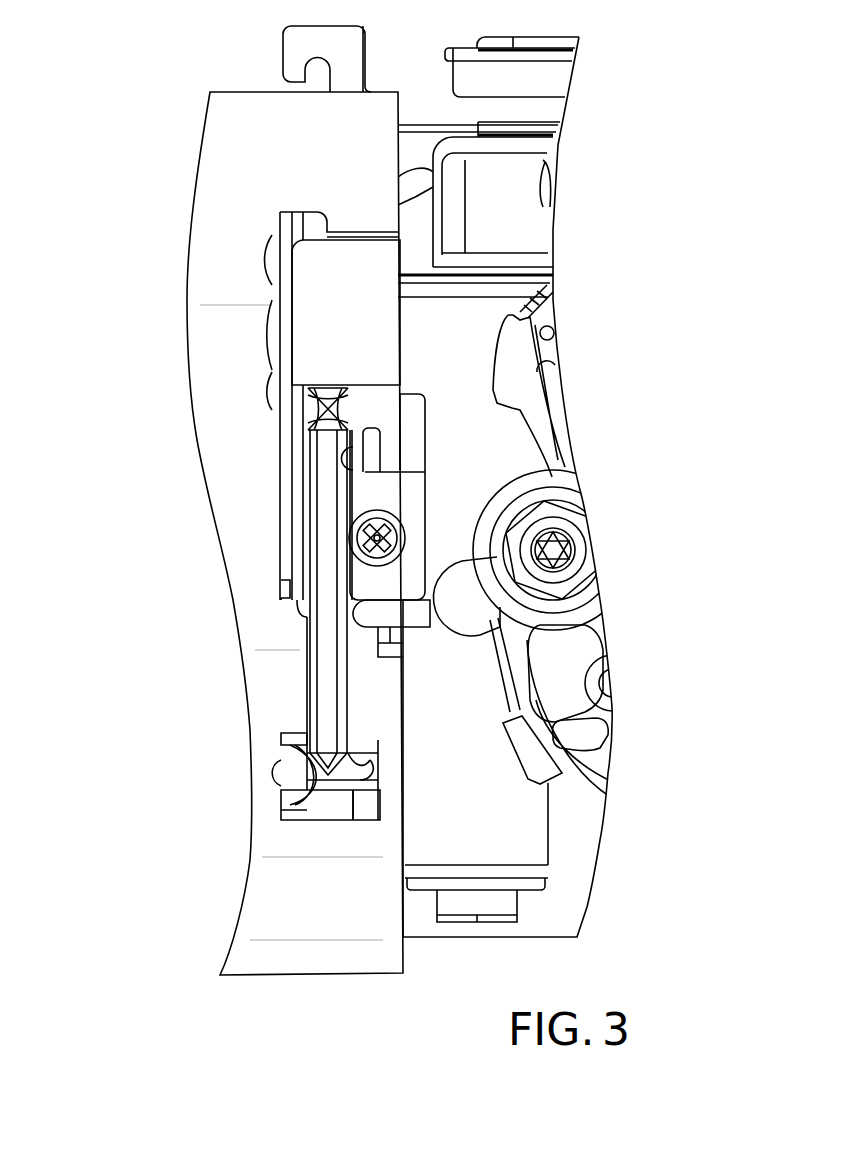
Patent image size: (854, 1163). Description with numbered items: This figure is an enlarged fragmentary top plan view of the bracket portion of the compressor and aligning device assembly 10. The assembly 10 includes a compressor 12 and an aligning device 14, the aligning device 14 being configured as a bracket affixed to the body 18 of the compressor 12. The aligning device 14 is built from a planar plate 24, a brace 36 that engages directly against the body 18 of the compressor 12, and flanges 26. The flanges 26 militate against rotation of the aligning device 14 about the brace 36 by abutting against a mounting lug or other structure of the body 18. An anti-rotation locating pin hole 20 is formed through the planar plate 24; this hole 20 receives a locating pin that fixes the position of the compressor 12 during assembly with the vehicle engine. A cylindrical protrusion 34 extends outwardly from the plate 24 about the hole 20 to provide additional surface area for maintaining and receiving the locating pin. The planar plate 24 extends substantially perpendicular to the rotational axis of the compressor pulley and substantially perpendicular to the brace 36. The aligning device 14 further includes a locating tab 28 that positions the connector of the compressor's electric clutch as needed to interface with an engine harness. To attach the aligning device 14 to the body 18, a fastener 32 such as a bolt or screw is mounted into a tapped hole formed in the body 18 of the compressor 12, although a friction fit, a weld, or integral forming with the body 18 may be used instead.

The compressor and aligning device assembly 10 is at (127, 76).
The compressor 12 is at (458, 437).
The aligning device 14 is at (362, 494).
The body 18 is at (590, 873).
The anti-rotation locating pin hole 20 is at (278, 287).
The planar plate 24 is at (280, 515).
The flanges 26 is at (378, 588).
The locating tab 28 is at (300, 768).
The fastener 32 is at (368, 540).
The cylindrical protrusion 34 is at (328, 318).
The brace 36 is at (330, 571).